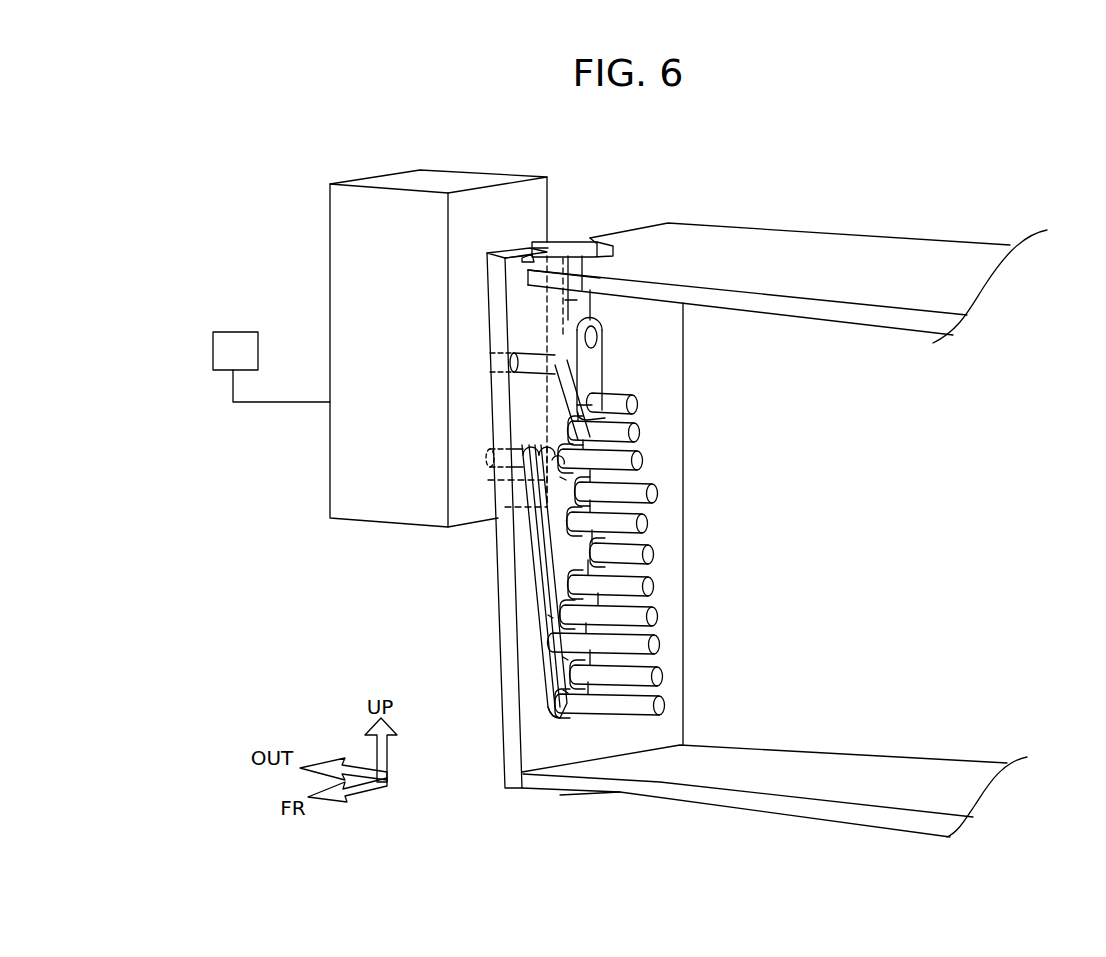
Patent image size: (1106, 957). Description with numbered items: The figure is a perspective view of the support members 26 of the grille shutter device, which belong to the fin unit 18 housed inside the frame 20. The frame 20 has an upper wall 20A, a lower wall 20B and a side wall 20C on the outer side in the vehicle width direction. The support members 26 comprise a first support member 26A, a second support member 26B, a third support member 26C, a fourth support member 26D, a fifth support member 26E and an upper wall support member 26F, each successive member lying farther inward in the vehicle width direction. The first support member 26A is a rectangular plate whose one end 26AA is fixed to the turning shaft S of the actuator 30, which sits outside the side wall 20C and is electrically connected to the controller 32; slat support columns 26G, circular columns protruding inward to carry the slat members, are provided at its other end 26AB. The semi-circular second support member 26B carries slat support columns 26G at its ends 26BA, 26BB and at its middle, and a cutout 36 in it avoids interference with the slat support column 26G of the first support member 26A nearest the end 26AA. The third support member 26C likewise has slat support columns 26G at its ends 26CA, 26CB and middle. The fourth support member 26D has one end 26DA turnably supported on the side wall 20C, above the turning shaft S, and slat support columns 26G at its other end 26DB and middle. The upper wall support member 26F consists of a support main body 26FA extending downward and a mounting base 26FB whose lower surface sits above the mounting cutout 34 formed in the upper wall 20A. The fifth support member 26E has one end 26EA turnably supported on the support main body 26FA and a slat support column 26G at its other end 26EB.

The fin unit 18 is at (701, 811).
The frame 20 is at (784, 504).
The upper wall 20A is at (758, 278).
The lower wall 20B is at (833, 795).
The side wall 20C is at (684, 337).
The support members 26 is at (706, 371).
The first support member 26A is at (485, 576).
The one end of the first support member 26AA is at (525, 441).
The other end of the first support member 26AB is at (552, 716).
The second support member 26B is at (595, 698).
The end of the second support member 26BA is at (548, 615).
The end of the second support member 26BB is at (563, 690).
The third support member 26C is at (581, 587).
The end of the third support member 26CA is at (560, 477).
The end of the third support member 26CB is at (563, 657).
The fourth support member 26D is at (568, 459).
The one end of the fourth support member 26DA is at (537, 352).
The other end of the fourth support member 26DB is at (593, 560).
The fifth support member 26E is at (527, 338).
The one end of the fifth support member 26EA is at (577, 318).
The other end of the fifth support member 26EB is at (590, 393).
The upper wall support member 26F is at (629, 248).
The support main body 26FA is at (580, 312).
The mounting base 26FB is at (585, 237).
The slat support column 26G is at (637, 432).
The actuator 30 is at (472, 181).
The controller 32 is at (232, 332).
The mounting cutout 34 is at (530, 258).
The cutout 36 is at (560, 530).
The turning shaft S is at (490, 483).